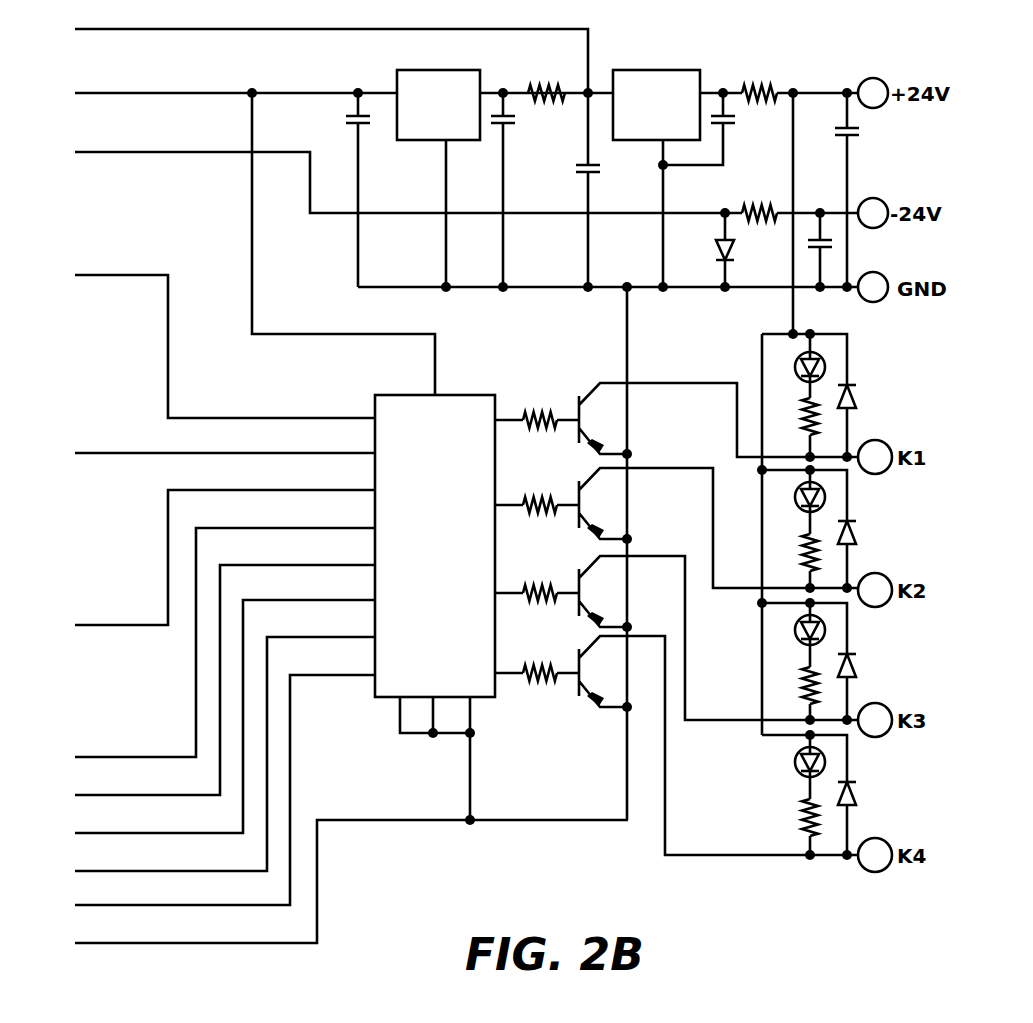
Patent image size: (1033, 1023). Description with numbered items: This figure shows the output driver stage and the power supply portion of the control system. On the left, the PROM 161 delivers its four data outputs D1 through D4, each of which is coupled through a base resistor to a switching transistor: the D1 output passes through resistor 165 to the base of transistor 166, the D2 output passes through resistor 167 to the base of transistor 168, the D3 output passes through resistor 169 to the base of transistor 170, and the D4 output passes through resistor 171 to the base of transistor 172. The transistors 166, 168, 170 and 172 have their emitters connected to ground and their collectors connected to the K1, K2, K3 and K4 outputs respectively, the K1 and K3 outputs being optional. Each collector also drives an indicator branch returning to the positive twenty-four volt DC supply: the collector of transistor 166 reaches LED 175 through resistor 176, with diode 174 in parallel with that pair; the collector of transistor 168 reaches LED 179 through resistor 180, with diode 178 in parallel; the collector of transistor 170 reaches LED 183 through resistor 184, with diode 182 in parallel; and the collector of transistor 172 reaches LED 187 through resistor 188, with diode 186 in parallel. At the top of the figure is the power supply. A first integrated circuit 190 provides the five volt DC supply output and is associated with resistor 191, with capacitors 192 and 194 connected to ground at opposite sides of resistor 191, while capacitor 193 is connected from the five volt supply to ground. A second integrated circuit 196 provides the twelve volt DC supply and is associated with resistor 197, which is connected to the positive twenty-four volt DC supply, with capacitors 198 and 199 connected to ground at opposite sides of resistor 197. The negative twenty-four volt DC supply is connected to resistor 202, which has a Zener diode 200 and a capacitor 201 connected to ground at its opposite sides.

The PROM 161 is at (468, 395).
The resistor 165 is at (537, 408).
The transistor 166 is at (718, 420).
The resistor 167 is at (537, 495).
The transistor 168 is at (718, 528).
The resistor 169 is at (537, 584).
The transistor 170 is at (718, 638).
The resistor 171 is at (537, 665).
The transistor 172 is at (718, 745).
The diode 174 is at (858, 394).
The LED 175 is at (794, 362).
The resistor 176 is at (802, 416).
The diode 178 is at (858, 538).
The LED 179 is at (794, 503).
The resistor 180 is at (809, 542).
The diode 182 is at (860, 667).
The LED 183 is at (793, 640).
The resistor 184 is at (807, 674).
The diode 186 is at (860, 803).
The LED 187 is at (796, 770).
The resistor 188 is at (798, 826).
The first integrated circuit 190 is at (433, 85).
The resistor 191 is at (537, 85).
The capacitor 192 is at (516, 120).
The capacitor 193 is at (344, 122).
The capacitor 194 is at (587, 170).
The second integrated circuit 196 is at (680, 70).
The resistor 197 is at (760, 82).
The capacitor 198 is at (735, 119).
The capacitor 199 is at (840, 134).
The Zener diode 200 is at (718, 245).
The capacitor 201 is at (835, 244).
The resistor 202 is at (756, 205).